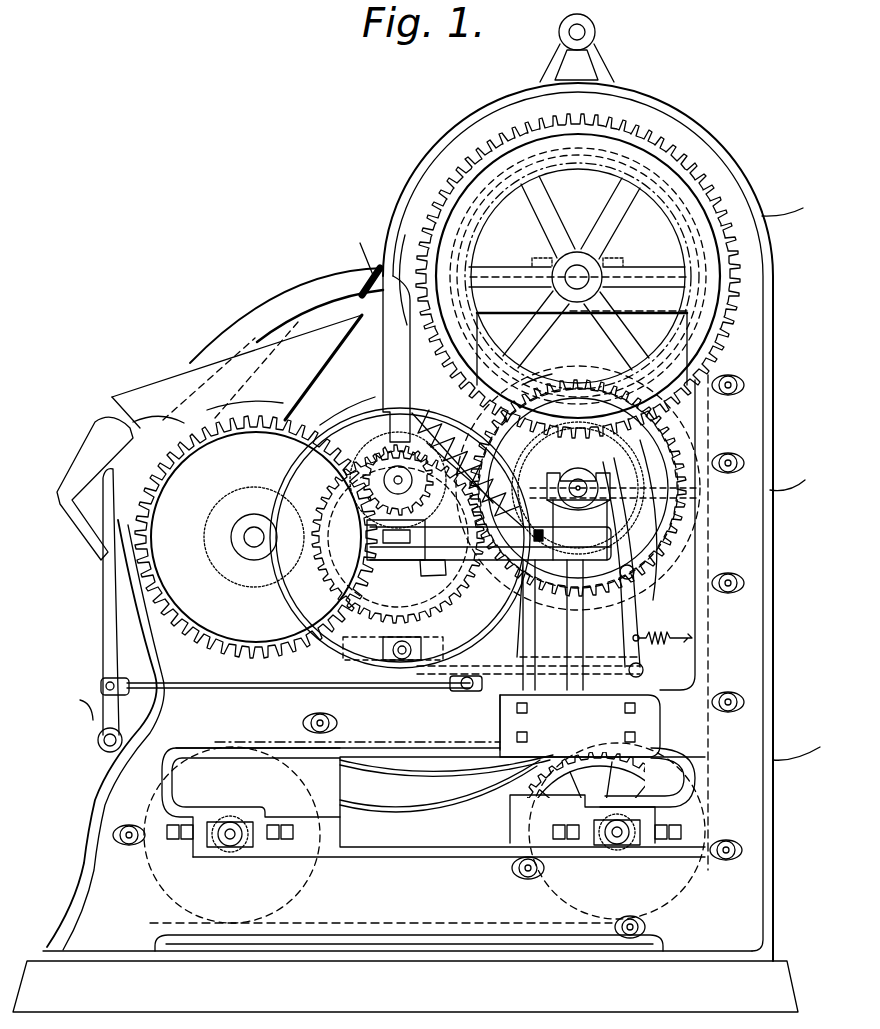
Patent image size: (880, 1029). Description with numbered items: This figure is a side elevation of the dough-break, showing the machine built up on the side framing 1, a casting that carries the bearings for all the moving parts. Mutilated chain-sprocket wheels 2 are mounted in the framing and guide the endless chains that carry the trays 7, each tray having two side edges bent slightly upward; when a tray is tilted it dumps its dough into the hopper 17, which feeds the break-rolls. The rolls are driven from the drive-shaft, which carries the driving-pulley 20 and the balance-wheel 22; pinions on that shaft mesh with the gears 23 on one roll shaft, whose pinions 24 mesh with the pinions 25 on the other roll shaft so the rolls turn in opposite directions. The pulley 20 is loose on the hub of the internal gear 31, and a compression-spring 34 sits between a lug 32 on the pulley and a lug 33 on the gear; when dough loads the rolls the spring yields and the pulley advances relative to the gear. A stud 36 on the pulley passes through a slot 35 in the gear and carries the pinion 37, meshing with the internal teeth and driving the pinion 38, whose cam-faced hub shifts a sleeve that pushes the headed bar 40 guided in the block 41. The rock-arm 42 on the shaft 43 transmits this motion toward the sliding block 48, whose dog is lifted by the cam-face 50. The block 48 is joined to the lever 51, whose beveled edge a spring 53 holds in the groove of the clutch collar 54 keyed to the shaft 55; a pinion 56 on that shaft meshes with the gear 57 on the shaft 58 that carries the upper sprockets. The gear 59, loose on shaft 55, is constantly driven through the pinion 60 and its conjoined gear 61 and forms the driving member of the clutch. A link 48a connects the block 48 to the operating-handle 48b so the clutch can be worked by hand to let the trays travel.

The side framing 1 is at (758, 322).
The mutilated chain-sprocket wheels 2 is at (424, 809).
The tray 7 is at (438, 472).
The hopper 17 is at (243, 371).
The driving-pulley 20 is at (482, 450).
The balance-wheel 22 is at (286, 315).
The gears 23 is at (256, 537).
The pinions 24 is at (249, 557).
The pinions 25 is at (140, 447).
The internal gear 31 is at (398, 543).
The lug 32 is at (392, 434).
The lug 33 is at (615, 506).
The compression-spring 34 is at (535, 445).
The slot 35 is at (406, 480).
The stud 36 is at (392, 486).
The pinion 37 is at (400, 538).
The pinion 38 is at (398, 537).
The headed bar 40 is at (372, 540).
The block 41 is at (395, 524).
The rock-arm 42 is at (437, 572).
The shaft 43 is at (550, 625).
The sliding block 48 is at (480, 672).
The link 48a is at (299, 710).
The operating-handle 48b is at (107, 633).
The cam-face 50 is at (462, 675).
The lever 51 is at (620, 533).
The spring 53 is at (673, 645).
The driven member of clutch 54 is at (565, 468).
The shaft 55 is at (582, 488).
The pinion 56 is at (690, 440).
The gear 57 is at (692, 166).
The shaft 58 is at (577, 266).
The gear 59 is at (700, 498).
The pinion 60 is at (515, 842).
The gear 61 is at (408, 639).